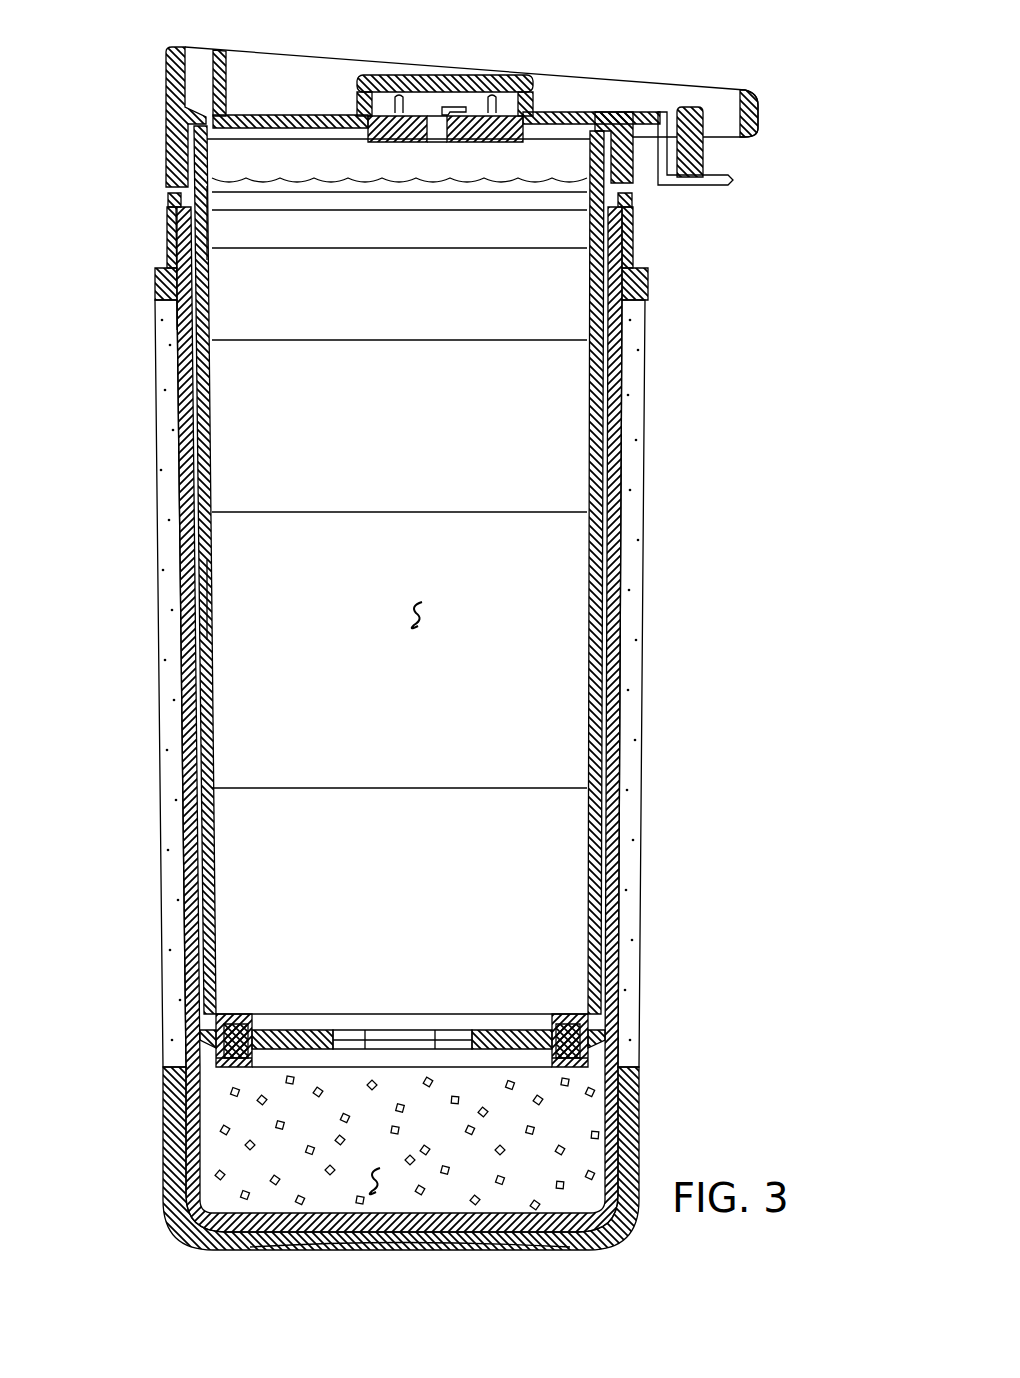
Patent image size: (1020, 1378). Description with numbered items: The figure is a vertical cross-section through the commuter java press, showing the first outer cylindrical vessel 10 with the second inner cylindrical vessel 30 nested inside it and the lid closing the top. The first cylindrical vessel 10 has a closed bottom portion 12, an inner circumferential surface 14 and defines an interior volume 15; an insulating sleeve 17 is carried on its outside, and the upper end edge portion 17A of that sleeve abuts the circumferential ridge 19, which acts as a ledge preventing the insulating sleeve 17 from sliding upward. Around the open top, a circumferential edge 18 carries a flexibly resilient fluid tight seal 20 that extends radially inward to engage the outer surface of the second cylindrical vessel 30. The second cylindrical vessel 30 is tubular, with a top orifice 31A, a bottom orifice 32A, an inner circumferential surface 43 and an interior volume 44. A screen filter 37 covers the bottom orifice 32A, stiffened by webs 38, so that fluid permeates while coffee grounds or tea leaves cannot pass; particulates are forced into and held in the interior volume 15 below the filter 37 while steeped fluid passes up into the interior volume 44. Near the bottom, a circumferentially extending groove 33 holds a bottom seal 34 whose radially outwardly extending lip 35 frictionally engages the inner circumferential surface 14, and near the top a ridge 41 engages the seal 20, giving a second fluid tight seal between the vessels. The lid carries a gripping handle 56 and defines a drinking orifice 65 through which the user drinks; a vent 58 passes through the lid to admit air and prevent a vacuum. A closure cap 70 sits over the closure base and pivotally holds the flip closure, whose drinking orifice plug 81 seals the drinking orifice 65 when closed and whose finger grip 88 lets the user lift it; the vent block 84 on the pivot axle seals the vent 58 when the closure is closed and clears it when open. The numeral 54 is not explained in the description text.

The first outer cylindrical vessel 10 is at (622, 435).
The closed bottom portion 12 is at (505, 1213).
The inner circumferential surface 14 is at (202, 620).
The interior volume 15 is at (376, 1166).
The insulating sleeve 17 is at (170, 432).
The upper end edge portion 17A is at (160, 305).
The circumferential edge 18 is at (170, 213).
The circumferential ridge 19 is at (162, 282).
The fluid tight seal 20 is at (188, 197).
The second inner cylindrical vessel 30 is at (603, 497).
The top orifice 31A is at (233, 142).
The bottom orifice 32A is at (405, 1062).
The circumferentially extending groove 33 is at (233, 1015).
The bottom seal 34 is at (202, 1036).
The radially outwardly extending lip 35 is at (214, 1059).
The screen filter 37 is at (340, 1030).
The webs 38 is at (302, 1030).
The ridge 41 is at (212, 196).
The inner circumferential surface 43 is at (212, 590).
The interior volume 44 is at (418, 600).
The lid skirt 54 is at (167, 124).
The gripping handle 56 is at (757, 88).
The vent 58 is at (437, 125).
The drinking orifice 65 is at (197, 62).
The closure cap 70 is at (380, 75).
The drinking orifice plug 81 is at (693, 103).
The vent block 84 is at (460, 105).
The finger grip 88 is at (727, 182).